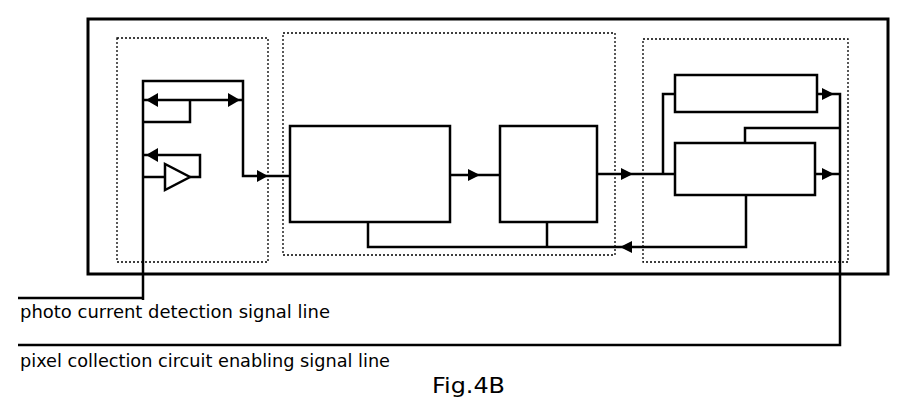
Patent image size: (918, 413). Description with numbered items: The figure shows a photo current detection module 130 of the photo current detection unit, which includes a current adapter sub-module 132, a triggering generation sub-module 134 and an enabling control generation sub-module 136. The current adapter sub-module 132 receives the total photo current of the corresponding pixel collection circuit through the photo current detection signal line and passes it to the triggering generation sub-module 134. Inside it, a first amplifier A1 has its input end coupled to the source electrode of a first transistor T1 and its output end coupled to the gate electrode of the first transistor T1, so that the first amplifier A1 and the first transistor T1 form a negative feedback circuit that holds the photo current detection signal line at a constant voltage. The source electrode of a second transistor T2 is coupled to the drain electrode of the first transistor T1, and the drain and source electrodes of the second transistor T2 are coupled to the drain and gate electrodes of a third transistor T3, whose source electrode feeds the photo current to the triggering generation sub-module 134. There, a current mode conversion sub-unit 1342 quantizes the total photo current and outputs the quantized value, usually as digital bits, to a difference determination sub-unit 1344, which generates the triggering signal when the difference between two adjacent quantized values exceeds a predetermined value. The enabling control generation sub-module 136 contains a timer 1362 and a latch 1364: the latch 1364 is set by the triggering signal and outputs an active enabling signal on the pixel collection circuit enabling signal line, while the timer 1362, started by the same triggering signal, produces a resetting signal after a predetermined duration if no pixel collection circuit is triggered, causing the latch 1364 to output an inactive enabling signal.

The photo current detection module 130 is at (553, 272).
The current adapter sub-module 132 is at (192, 150).
The triggering generation sub-module 134 is at (449, 144).
The enabling control generation sub-module 136 is at (745, 150).
The current mode conversion sub-unit 1342 is at (370, 174).
The difference determination sub-unit 1344 is at (548, 174).
The timer 1362 is at (746, 93).
The latch 1364 is at (745, 169).
The first transistor T1 is at (162, 162).
The second transistor T2 is at (207, 190).
The third transistor T3 is at (248, 96).
The first amplifier A1 is at (167, 183).